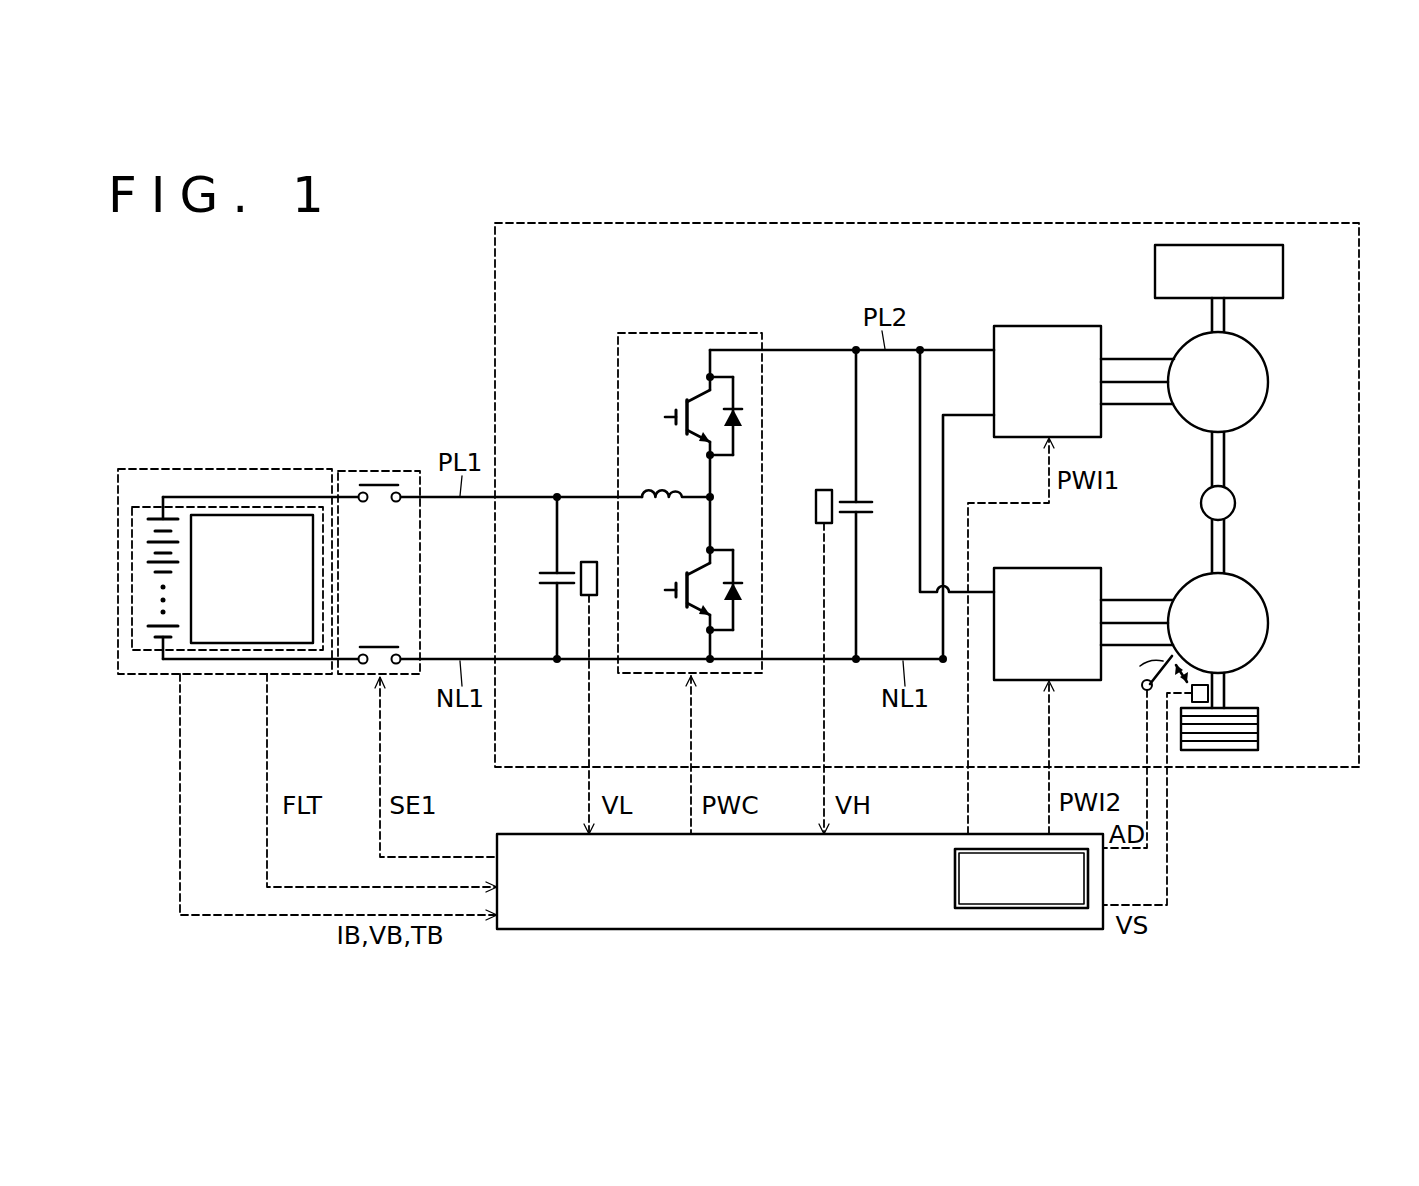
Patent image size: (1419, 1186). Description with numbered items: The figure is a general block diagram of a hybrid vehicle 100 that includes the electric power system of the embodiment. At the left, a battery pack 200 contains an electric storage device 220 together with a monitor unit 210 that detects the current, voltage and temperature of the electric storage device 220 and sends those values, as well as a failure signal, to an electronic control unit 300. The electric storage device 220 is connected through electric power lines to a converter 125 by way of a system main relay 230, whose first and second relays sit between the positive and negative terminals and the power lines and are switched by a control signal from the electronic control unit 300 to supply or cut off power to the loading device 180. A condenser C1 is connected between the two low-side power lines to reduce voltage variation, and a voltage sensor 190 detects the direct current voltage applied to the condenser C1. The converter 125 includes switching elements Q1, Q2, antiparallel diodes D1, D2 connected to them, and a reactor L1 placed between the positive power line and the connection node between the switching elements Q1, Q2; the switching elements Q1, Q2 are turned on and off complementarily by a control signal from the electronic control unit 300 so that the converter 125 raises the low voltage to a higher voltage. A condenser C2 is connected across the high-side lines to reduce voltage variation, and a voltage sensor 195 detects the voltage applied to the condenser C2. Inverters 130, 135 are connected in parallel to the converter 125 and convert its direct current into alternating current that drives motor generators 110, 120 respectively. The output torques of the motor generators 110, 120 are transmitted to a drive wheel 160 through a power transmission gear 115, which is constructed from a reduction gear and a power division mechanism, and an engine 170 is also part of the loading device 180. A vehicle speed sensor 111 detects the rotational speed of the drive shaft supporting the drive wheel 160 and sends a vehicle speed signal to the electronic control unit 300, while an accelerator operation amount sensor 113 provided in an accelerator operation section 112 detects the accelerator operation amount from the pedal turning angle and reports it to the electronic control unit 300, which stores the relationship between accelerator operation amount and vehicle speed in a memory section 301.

The hybrid vehicle 100 is at (1404, 199).
The loading device 180 is at (938, 224).
The battery pack 200 is at (157, 411).
The electric storage device 220 is at (153, 517).
The monitor unit 210 is at (275, 515).
The system main relay 230 is at (350, 470).
The condenser C1 is at (552, 572).
The voltage sensor 190 is at (589, 562).
The reactor L1 is at (659, 487).
The converter 125 is at (806, 568).
The switching element Q1 is at (681, 398).
The switching element Q2 is at (681, 571).
The antiparallel diode D1 is at (746, 414).
The antiparallel diode D2 is at (746, 587).
The voltage sensor 195 is at (824, 490).
The condenser C2 is at (862, 500).
The inverter 130 is at (1057, 326).
The inverter 135 is at (1057, 568).
The engine 170 is at (1283, 270).
The motor generator 110 is at (1263, 354).
The power transmission gear 115 is at (1236, 503).
The motor generator 120 is at (1263, 594).
The drive wheel 160 is at (1243, 708).
The vehicle speed sensor 111 is at (1210, 690).
The accelerator operation section 112 is at (1146, 668).
The accelerator operation amount sensor 113 is at (1144, 691).
The electronic control unit 300 is at (914, 832).
The memory section 301 is at (1022, 908).